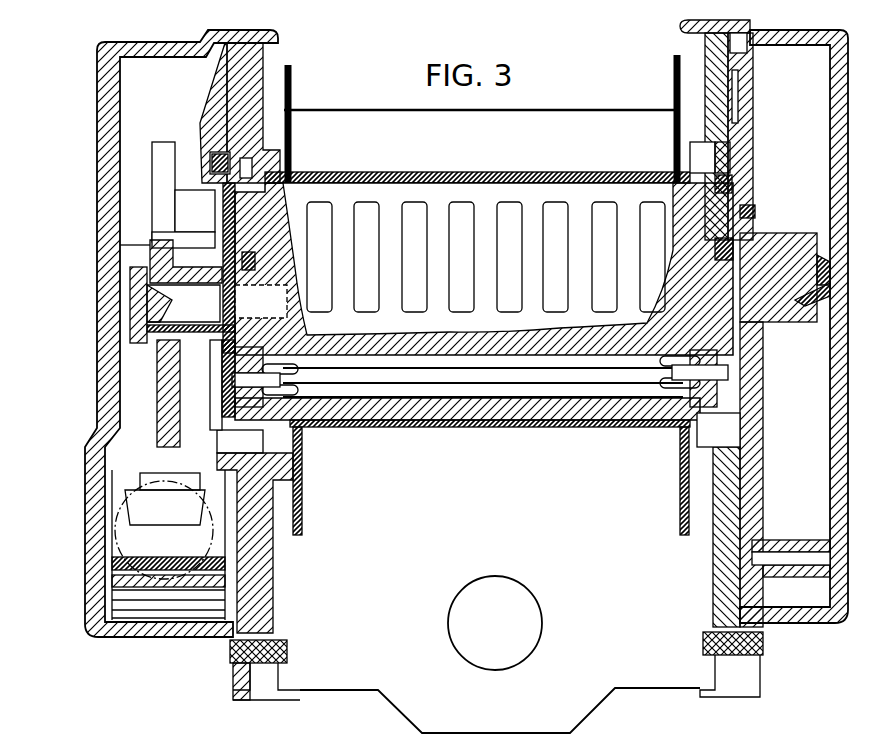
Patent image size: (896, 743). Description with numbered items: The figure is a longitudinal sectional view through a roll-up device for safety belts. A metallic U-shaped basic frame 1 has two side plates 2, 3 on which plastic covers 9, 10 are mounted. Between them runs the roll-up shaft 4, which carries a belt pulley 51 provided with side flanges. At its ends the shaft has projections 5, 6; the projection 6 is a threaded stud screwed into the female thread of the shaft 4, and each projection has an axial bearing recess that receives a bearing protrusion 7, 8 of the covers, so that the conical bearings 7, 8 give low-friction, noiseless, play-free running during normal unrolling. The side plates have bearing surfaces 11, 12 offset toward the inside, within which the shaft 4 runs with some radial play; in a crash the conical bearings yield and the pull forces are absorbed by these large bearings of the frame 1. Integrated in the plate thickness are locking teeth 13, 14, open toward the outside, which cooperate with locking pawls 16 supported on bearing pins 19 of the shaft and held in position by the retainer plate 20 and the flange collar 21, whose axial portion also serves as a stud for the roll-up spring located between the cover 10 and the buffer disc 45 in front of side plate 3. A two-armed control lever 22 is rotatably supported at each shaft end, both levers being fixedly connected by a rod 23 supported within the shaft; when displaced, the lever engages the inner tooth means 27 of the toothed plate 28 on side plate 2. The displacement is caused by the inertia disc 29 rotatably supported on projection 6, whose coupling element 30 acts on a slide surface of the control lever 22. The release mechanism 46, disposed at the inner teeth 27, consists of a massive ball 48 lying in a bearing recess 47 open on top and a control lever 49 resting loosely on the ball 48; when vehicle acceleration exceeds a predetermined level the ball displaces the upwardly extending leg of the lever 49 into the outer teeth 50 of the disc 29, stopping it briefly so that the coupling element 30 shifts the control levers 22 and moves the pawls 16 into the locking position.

The basic frame 1 is at (652, 698).
The side plate 2 is at (258, 50).
The side plate 3 is at (708, 43).
The roll-up shaft 4 is at (417, 405).
The shaft projection 5 is at (806, 270).
The shaft projection 6 is at (142, 300).
The bearing protrusion 7 is at (138, 306).
The bearing protrusion 8 is at (815, 292).
The cover 9 is at (118, 365).
The cover 10 is at (838, 525).
The bearing surface 11 is at (282, 176).
The bearing surface 12 is at (700, 160).
The locking teeth 13 is at (291, 112).
The locking teeth 14 is at (715, 150).
The locking pawl 16 is at (258, 165).
The bearing pin 19 is at (160, 240).
The retainer plate 20 is at (205, 188).
The flange collar 21 is at (778, 243).
The control lever 22 is at (225, 380).
The rod 23 is at (604, 372).
The inner tooth means 27 is at (232, 440).
The toothed plate 28 is at (220, 128).
The inertia disc 29 is at (165, 190).
The coupling element 30 is at (190, 212).
The buffer disc 45 is at (750, 455).
The release mechanism 46 is at (140, 595).
The bearing recess 47 is at (127, 578).
The ball 48 is at (118, 542).
The control lever 49 is at (125, 500).
The outer teeth 50 is at (160, 470).
The belt pulley 51 is at (302, 530).